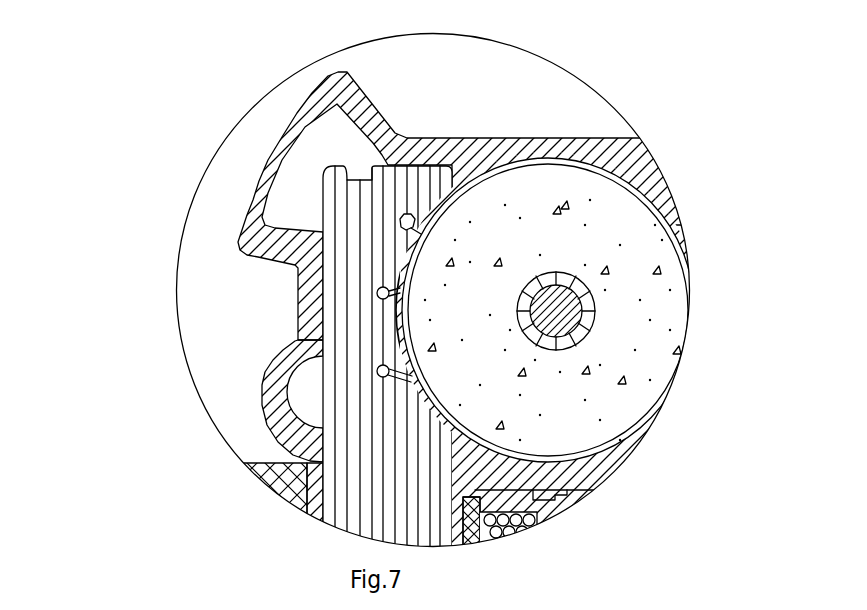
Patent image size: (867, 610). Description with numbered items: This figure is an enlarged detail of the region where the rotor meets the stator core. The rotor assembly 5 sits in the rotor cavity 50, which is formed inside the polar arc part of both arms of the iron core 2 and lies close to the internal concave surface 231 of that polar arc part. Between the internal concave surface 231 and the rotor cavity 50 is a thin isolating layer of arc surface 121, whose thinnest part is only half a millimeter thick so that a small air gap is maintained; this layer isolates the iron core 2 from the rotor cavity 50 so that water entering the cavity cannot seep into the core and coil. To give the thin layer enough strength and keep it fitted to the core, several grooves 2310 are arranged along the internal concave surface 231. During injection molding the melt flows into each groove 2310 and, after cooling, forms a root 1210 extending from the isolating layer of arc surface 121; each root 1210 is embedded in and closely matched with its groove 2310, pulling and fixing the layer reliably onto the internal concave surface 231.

The rotor assembly 5 is at (633, 225).
The iron core 2 is at (347, 447).
The isolating layer of arc surface 121 is at (408, 246).
The groove 2310 is at (378, 291).
The root 1210 is at (378, 296).
The internal concave surface 231 is at (400, 332).
The rotor cavity 50 is at (378, 372).